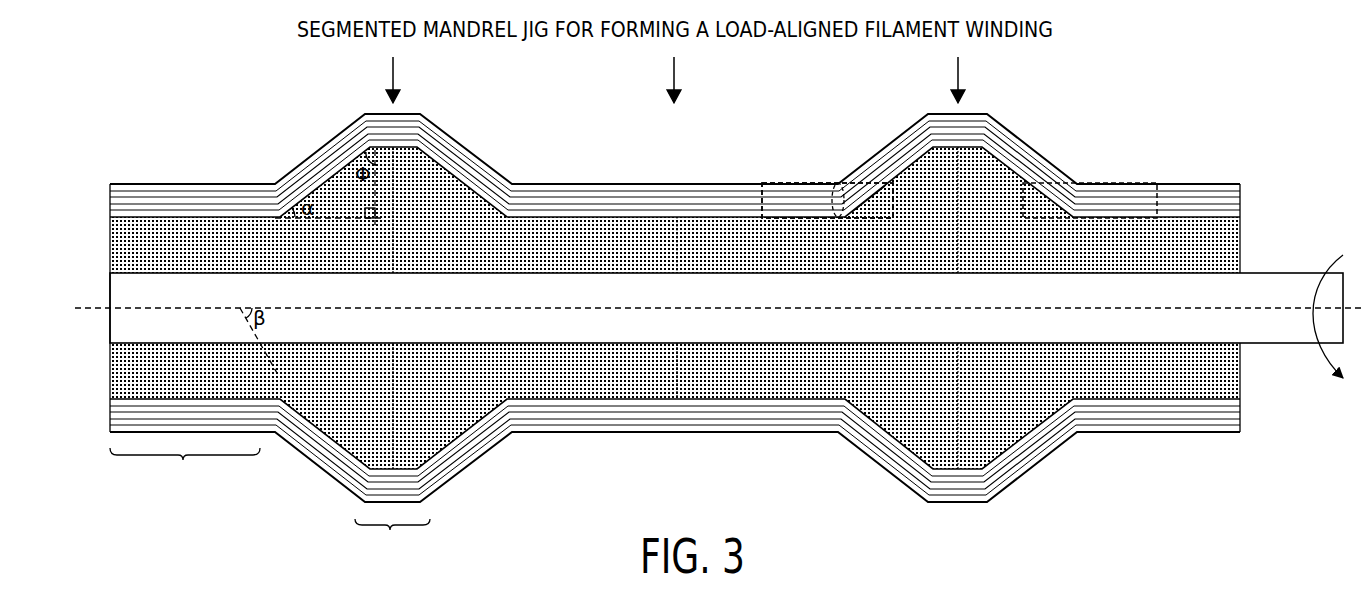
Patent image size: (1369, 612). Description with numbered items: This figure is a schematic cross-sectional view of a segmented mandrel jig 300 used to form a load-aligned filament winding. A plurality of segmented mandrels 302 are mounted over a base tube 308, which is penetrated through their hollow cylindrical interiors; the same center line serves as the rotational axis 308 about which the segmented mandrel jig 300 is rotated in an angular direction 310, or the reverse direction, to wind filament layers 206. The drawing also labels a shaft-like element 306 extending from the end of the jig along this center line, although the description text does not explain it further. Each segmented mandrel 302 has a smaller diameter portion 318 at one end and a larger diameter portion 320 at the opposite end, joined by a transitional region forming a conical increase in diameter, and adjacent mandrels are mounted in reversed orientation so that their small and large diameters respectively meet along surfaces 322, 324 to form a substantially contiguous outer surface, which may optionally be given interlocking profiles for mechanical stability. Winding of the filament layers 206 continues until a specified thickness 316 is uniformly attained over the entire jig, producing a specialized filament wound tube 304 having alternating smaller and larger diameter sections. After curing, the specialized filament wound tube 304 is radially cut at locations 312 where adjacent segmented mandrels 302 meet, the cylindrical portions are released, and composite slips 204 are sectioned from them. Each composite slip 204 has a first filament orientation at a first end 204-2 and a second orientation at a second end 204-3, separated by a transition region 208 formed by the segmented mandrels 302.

The segmented mandrel jig 300 is at (278, 52).
The segmented mandrel 302 is at (1114, 257).
The specialized filament wound tube 304 is at (105, 218).
The filament layer 206 is at (176, 201).
The thickness 316 is at (110, 438).
The shaft 306 is at (1283, 272).
The rotational axis 308 is at (82, 308).
The angular direction 310 is at (1330, 255).
The location 312 is at (956, 68).
The smaller diameter portion 318 is at (185, 460).
The larger diameter portion 320 is at (392, 530).
The surface 322 is at (396, 244).
The surface 324 is at (676, 247).
The composite slip 204 is at (1061, 183).
The first end 204-2 is at (762, 198).
The second end 204-3 is at (885, 183).
The transition region 208 is at (833, 195).